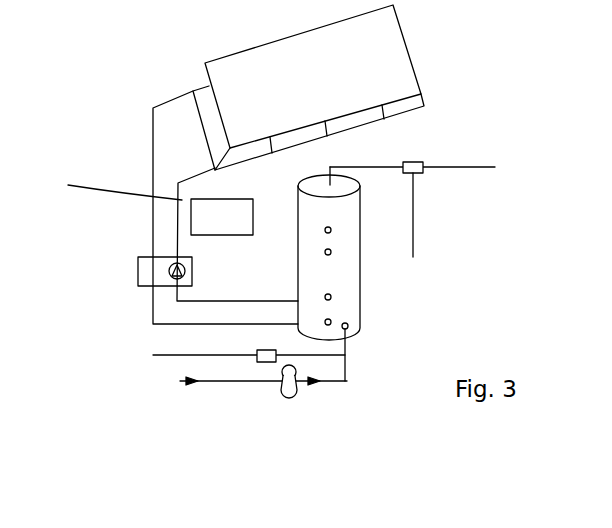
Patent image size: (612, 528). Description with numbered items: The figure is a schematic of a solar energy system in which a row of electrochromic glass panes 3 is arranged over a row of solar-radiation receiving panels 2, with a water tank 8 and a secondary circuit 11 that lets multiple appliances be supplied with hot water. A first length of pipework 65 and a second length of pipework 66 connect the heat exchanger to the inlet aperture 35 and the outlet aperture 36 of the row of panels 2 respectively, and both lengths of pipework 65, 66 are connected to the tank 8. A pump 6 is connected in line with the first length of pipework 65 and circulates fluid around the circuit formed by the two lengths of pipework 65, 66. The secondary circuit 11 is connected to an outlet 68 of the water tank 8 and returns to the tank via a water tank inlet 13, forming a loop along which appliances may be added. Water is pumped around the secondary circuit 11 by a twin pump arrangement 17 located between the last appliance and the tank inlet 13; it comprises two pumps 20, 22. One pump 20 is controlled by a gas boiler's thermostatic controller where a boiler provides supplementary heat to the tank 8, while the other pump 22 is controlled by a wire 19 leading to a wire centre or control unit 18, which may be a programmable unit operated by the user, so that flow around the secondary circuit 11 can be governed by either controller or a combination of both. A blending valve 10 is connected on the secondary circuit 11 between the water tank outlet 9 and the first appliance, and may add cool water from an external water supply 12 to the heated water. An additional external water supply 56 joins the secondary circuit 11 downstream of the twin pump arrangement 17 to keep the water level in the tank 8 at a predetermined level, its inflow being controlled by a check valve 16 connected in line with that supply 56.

The solar-radiation receiving panels 2 is at (372, 118).
The electrochromic glass panes 3 is at (277, 65).
The pump 6 is at (136, 272).
The tank 8 is at (360, 283).
The water tank outlet 9 is at (377, 167).
The blending valve 10 is at (417, 175).
The secondary circuit 11 is at (482, 167).
The external water supply 12 is at (413, 222).
The water tank inlet 13 is at (347, 340).
The check valve 16 is at (263, 352).
The twin pump arrangement 17 is at (312, 393).
The control unit 18 is at (191, 220).
The wire 19 is at (92, 188).
The pump 20 is at (282, 375).
The pump 22 is at (292, 403).
The inlet aperture 35 is at (212, 165).
The outlet aperture 36 is at (197, 97).
The external water supply 56 is at (177, 357).
The first length of pipework 65 is at (160, 127).
The second length of pipework 66 is at (183, 200).
The outlet 68 is at (330, 180).